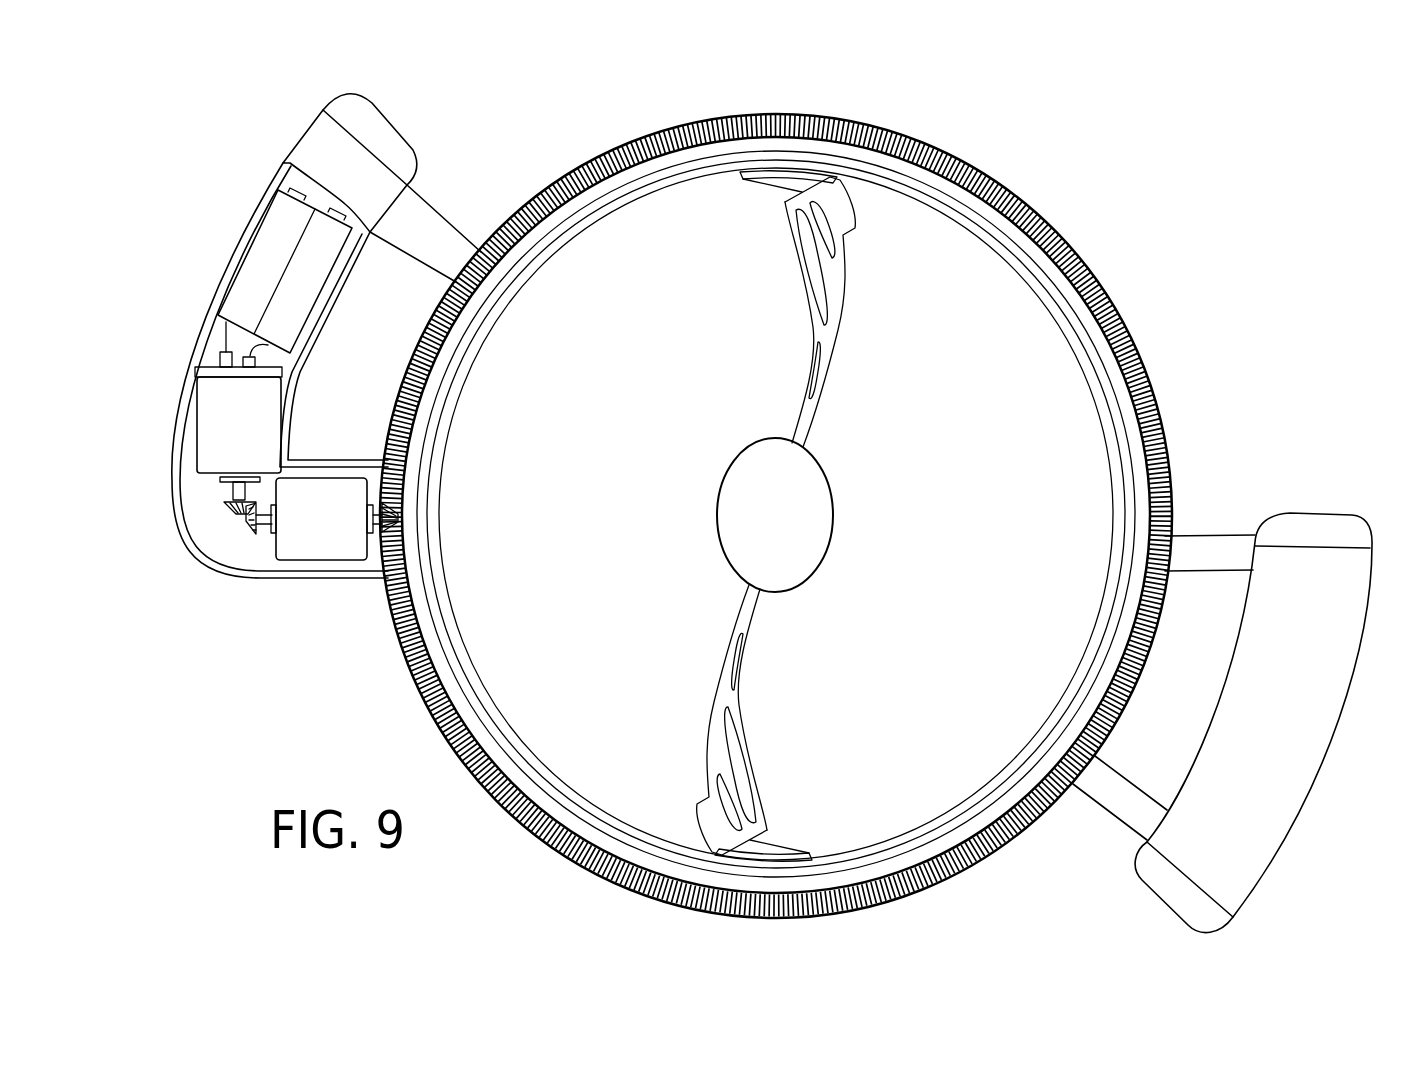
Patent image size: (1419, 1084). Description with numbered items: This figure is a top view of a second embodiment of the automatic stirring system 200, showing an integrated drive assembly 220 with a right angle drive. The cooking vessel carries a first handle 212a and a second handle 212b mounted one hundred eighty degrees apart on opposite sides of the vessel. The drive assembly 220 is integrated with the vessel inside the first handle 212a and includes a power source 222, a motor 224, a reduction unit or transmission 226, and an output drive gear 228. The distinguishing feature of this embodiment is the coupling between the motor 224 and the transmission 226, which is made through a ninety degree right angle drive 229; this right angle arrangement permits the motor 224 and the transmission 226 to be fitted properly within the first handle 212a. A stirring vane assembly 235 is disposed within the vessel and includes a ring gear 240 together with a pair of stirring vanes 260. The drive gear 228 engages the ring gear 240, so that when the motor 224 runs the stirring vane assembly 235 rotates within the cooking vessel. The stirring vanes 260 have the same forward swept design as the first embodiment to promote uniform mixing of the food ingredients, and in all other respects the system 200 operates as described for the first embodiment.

The automatic stirring system 200 is at (512, 115).
The first handle 212a is at (214, 344).
The second handle 212b is at (1296, 782).
The drive assembly 220 is at (238, 194).
The power source 222 is at (257, 263).
The motor 224 is at (259, 428).
The reduction unit or transmission 226 is at (342, 535).
The output drive gear 228 is at (392, 512).
The right angle drive 229 is at (233, 512).
The stirring vane assembly 235 is at (955, 148).
The ring gear 240 is at (418, 680).
The stirring vanes 260 is at (843, 290).